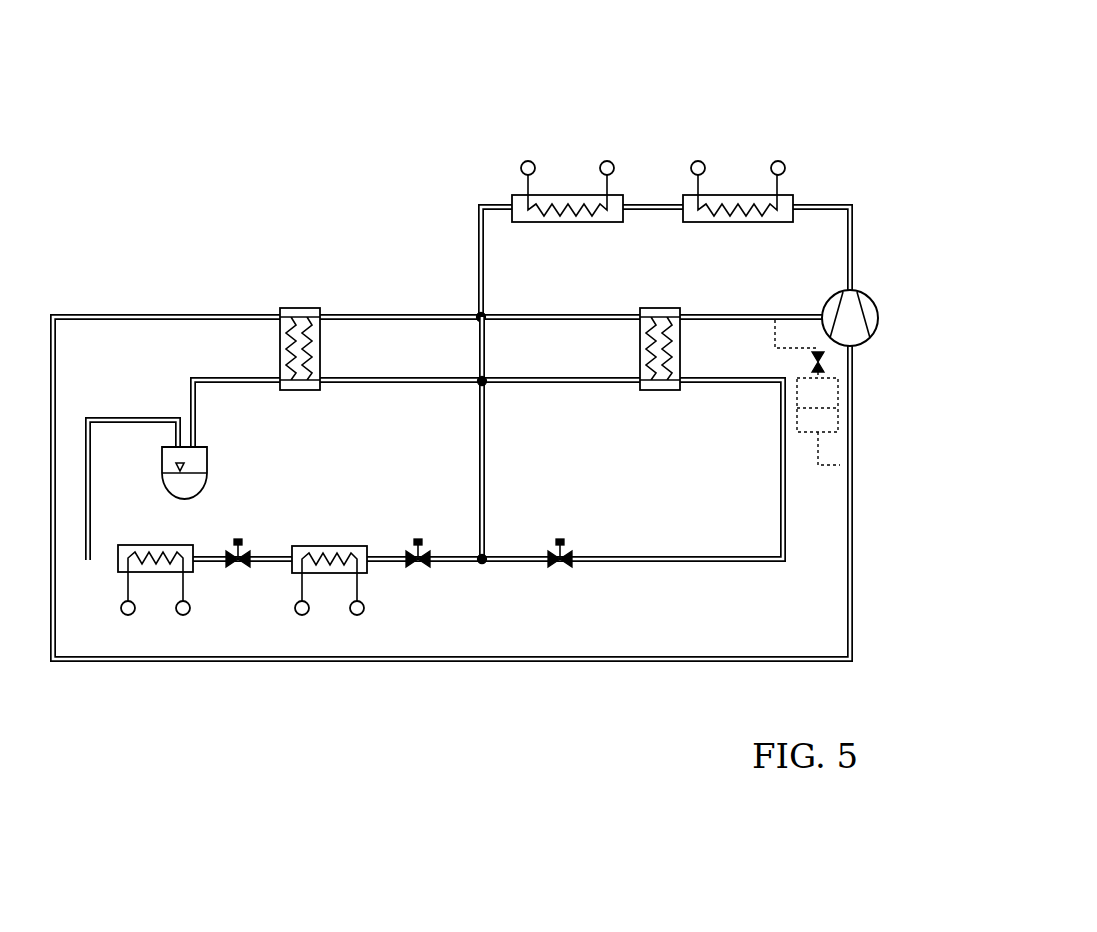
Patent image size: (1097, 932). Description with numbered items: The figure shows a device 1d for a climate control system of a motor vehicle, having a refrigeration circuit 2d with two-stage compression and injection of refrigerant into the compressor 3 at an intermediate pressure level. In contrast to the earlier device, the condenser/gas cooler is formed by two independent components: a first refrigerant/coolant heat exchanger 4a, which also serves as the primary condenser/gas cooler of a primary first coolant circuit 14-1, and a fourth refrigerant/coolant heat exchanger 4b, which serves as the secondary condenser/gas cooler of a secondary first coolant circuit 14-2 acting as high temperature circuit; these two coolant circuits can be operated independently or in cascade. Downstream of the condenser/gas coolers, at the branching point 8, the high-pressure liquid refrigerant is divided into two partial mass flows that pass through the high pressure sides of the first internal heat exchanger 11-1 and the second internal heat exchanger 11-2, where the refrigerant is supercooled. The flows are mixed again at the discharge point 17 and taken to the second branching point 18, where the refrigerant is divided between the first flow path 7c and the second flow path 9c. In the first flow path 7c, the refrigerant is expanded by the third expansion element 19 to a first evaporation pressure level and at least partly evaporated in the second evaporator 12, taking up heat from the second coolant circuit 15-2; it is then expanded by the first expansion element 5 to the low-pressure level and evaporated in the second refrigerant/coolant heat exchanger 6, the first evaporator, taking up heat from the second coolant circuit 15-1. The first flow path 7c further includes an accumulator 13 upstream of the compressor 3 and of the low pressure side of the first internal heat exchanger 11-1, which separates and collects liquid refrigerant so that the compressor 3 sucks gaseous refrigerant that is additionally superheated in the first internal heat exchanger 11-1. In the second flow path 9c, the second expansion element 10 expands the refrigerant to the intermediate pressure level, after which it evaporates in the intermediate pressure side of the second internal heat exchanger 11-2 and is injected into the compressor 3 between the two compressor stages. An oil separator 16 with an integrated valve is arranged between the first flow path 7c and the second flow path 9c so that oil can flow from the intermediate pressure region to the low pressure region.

The device 1d is at (845, 150).
The refrigeration circuit 2d is at (873, 252).
The compressor 3 is at (874, 322).
The first refrigerant/coolant heat exchanger 4a is at (740, 205).
The fourth refrigerant/coolant heat exchanger 4b is at (560, 205).
The first expansion element 5 is at (240, 545).
The second refrigerant/coolant heat exchanger 6 is at (182, 550).
The first flow path 7c is at (152, 315).
The branching point 8 is at (478, 314).
The second flow path 9c is at (757, 315).
The second expansion element 10 is at (563, 540).
The first internal heat exchanger 11-1 is at (300, 306).
The second internal heat exchanger 11-2 is at (665, 393).
The second evaporator 12 is at (345, 552).
The accumulator 13 is at (185, 468).
The primary first coolant circuit 14-1 is at (701, 160).
The secondary first coolant circuit 14-2 is at (531, 160).
The second coolant circuit 15-1 is at (190, 613).
The second coolant circuit 15-2 is at (364, 613).
The oil separator 16 is at (825, 398).
The discharge point 17 is at (490, 388).
The second branching point 18 is at (486, 563).
The third expansion element 19 is at (420, 540).